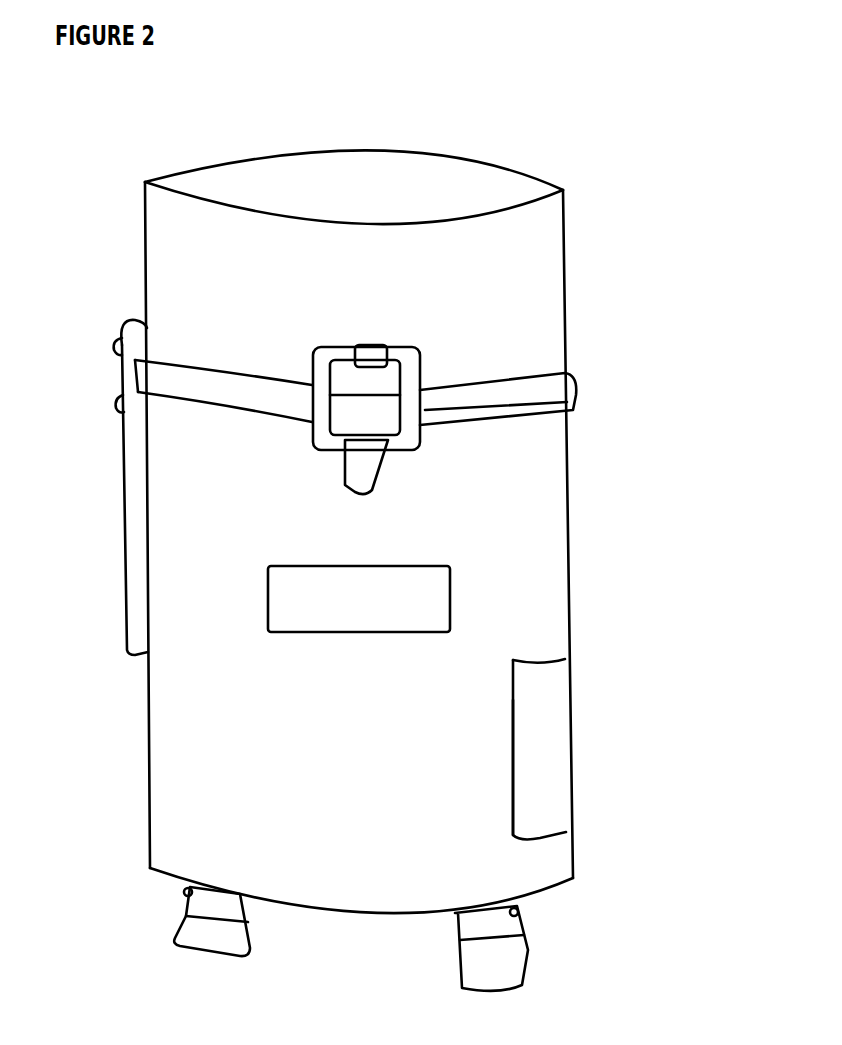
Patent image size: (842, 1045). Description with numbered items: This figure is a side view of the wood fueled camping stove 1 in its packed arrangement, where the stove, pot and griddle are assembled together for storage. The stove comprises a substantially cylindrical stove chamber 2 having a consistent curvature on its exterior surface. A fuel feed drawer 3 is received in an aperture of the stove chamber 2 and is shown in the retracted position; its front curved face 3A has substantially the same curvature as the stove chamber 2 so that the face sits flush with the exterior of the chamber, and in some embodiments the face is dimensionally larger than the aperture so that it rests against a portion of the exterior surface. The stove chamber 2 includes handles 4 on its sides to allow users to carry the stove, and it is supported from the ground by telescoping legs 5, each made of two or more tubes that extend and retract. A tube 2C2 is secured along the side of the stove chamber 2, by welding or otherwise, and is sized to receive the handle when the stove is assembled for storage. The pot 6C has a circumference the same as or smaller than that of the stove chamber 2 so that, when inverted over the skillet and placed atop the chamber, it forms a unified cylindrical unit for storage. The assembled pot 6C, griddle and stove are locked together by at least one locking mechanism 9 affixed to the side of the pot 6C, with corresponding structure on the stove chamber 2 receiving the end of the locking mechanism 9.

The wood fueled camping stove 1 is at (607, 173).
The stove chamber 2 is at (540, 480).
The tube 2C2 is at (143, 600).
The fuel feed drawer 3 is at (540, 733).
The front curved face 3A is at (548, 805).
The handles 4 is at (470, 600).
The telescoping legs 5 is at (500, 968).
The pot 6C is at (568, 293).
The locking mechanism 9 is at (567, 402).